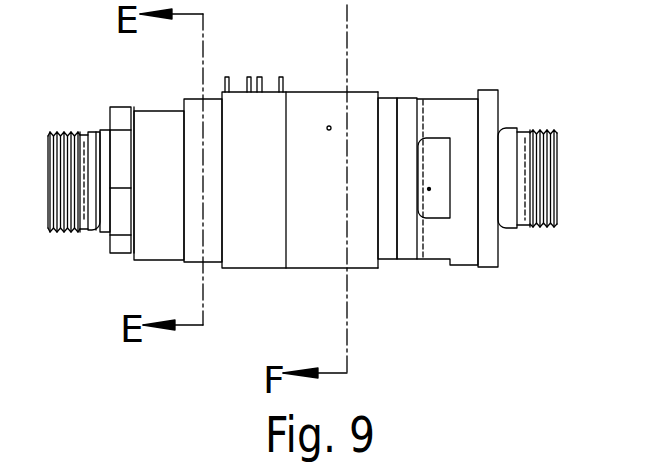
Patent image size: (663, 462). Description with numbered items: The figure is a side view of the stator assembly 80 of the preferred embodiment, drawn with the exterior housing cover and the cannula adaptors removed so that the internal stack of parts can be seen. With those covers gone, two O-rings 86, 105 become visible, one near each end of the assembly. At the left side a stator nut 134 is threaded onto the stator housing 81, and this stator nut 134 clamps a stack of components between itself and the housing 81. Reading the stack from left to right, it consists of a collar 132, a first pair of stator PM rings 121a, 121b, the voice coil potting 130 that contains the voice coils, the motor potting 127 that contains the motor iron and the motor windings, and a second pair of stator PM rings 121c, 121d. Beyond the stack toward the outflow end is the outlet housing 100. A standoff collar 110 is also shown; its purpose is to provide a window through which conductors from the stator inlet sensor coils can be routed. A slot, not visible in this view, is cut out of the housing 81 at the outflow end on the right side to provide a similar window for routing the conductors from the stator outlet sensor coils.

The stator assembly 80 is at (570, 62).
The stator housing 81 is at (453, 122).
The O-ring 86 is at (102, 220).
The outlet housing 100 is at (487, 132).
The O-ring 105 is at (508, 130).
The standoff collar 110 is at (429, 189).
The stator PM ring 121a is at (193, 252).
The stator PM ring 121b is at (217, 236).
The stator PM ring 121c is at (385, 113).
The stator PM ring 121d is at (409, 113).
The motor potting 127 is at (363, 232).
The voice coil potting 130 is at (255, 240).
The collar 132 is at (158, 217).
The stator nut 134 is at (118, 115).